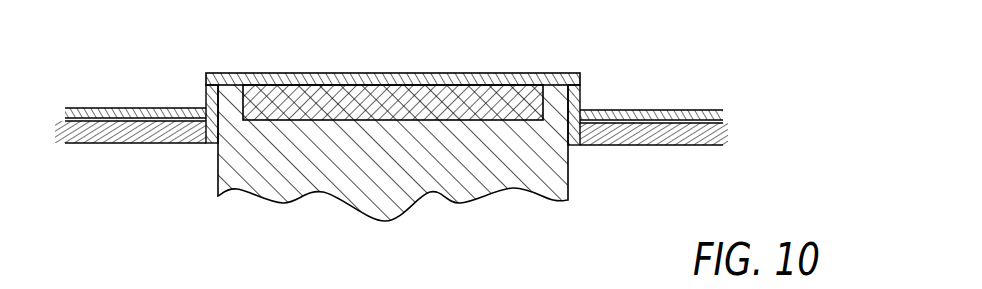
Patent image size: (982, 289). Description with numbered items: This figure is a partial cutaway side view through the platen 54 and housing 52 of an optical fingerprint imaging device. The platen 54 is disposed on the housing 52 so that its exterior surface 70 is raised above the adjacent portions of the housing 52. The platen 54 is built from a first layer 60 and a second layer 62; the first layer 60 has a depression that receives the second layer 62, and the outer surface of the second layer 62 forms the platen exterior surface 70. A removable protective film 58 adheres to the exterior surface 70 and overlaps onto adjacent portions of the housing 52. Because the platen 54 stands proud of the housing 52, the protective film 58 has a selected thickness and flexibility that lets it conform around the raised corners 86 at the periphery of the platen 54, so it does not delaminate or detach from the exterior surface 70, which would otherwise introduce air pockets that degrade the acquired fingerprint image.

The housing 52 is at (643, 145).
The platen 54 is at (272, 198).
The protective film 58 is at (653, 110).
The first layer 60 is at (478, 167).
The second layer 62 is at (422, 103).
The exterior surface 70 is at (357, 85).
The raised corners 86 is at (206, 75).